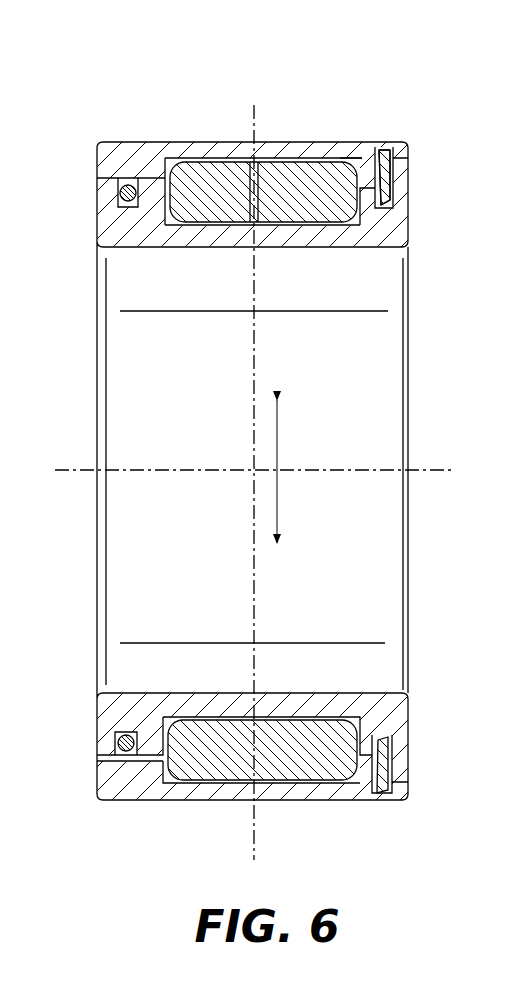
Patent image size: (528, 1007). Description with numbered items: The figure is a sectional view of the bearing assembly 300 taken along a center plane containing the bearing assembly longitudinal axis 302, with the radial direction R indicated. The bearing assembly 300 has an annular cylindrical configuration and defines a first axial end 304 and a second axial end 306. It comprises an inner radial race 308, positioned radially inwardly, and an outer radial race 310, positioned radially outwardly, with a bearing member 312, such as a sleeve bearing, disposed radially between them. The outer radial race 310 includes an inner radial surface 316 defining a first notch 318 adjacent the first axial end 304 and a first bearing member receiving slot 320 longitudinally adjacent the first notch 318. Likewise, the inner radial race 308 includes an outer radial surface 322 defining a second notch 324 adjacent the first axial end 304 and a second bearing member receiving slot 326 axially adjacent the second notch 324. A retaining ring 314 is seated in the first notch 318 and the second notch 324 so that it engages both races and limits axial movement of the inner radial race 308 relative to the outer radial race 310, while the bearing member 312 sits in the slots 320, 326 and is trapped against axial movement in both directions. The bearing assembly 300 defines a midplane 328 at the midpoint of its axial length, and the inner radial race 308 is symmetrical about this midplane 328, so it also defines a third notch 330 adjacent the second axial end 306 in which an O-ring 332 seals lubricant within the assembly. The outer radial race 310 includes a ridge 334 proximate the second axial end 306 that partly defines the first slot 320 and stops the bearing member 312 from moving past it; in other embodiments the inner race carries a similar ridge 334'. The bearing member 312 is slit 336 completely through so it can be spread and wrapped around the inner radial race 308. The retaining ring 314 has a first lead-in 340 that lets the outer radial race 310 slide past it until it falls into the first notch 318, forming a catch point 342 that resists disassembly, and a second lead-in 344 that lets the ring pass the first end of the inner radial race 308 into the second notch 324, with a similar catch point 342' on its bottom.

The bearing assembly 300 is at (362, 70).
The bearing assembly longitudinal axis 302 is at (446, 478).
The first axial end 304 is at (410, 755).
The second axial end 306 is at (98, 752).
The inner radial race 308 is at (395, 712).
The outer radial race 310 is at (132, 797).
The bearing member 312 is at (190, 762).
The retaining ring 314 is at (368, 157).
The inner radial surface 316 is at (165, 150).
The first notch 318 is at (383, 148).
The first bearing member receiving slot 320 is at (180, 142).
The outer radial surface 322 is at (363, 205).
The second notch 324 is at (380, 205).
The second bearing member receiving slot 326 is at (170, 226).
The midplane 328 is at (255, 811).
The third notch 330 is at (118, 208).
The O-ring 332 is at (133, 177).
The ridge 334 is at (131, 108).
The ridge 334' is at (135, 704).
The slit 336 is at (258, 165).
The first lead-in 340 is at (388, 176).
The catch point 342 is at (428, 140).
The catch point 342' is at (429, 218).
The second lead-in 344 is at (392, 195).
The radial direction R is at (277, 442).